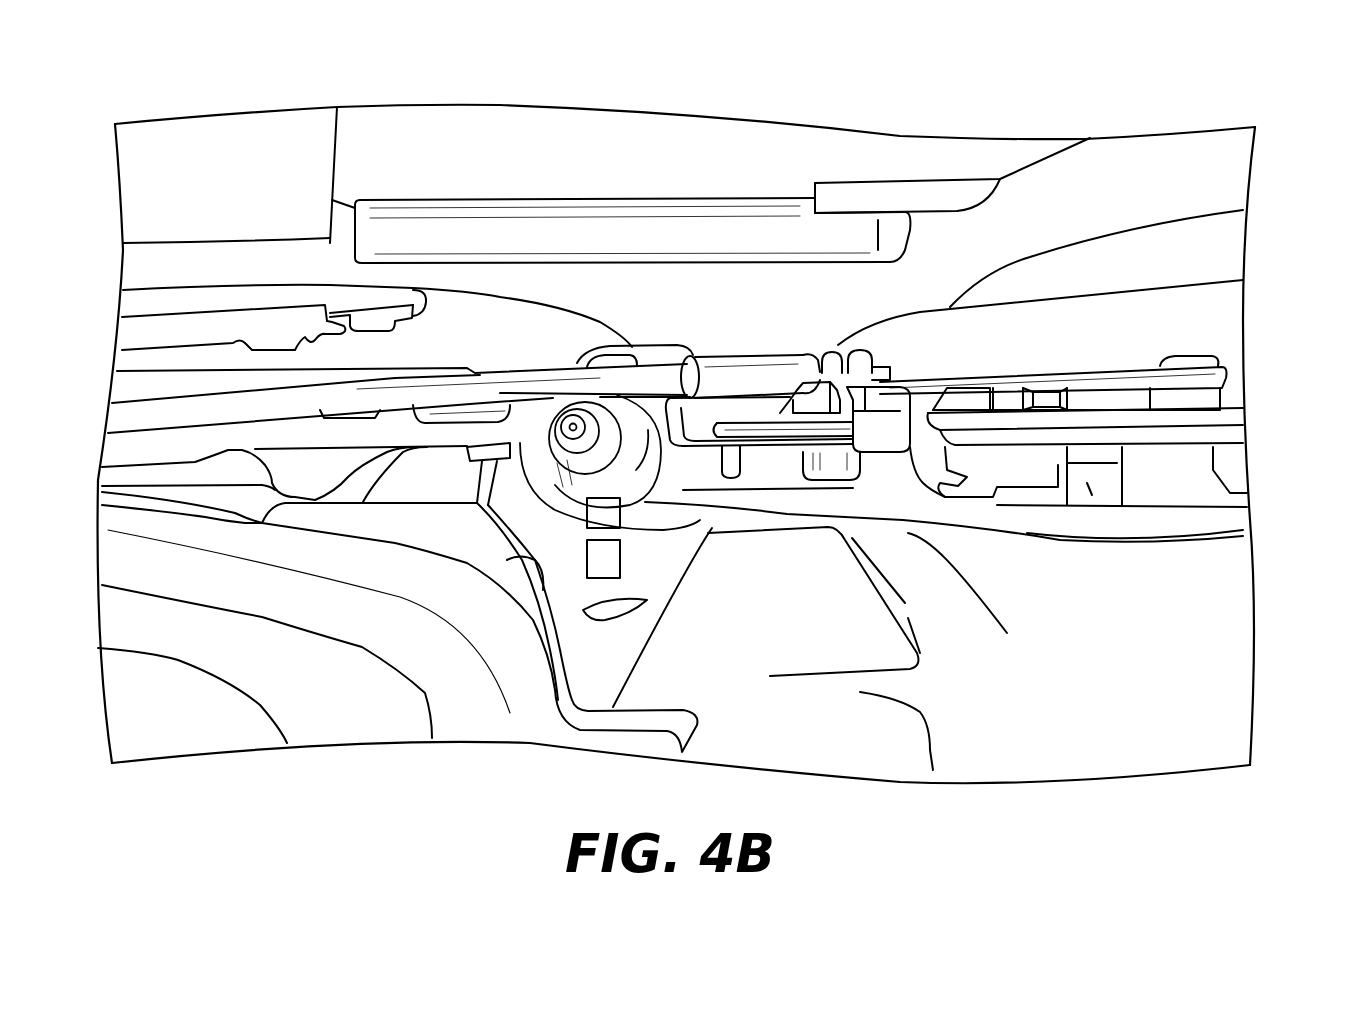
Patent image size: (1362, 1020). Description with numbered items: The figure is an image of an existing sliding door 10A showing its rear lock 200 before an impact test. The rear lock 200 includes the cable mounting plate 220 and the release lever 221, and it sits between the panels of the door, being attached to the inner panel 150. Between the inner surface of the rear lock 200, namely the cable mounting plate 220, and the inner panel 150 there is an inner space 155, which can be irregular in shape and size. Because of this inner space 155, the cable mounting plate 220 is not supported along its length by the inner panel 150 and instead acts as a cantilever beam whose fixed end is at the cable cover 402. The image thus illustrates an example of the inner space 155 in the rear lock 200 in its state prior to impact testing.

The sliding door 10A is at (1262, 121).
The inner panel 150 is at (472, 685).
The inner space 155 is at (801, 545).
The rear lock 200 is at (982, 313).
The cable mounting plate 220 is at (768, 447).
The release lever 221 is at (1027, 380).
The cable cover 402 is at (743, 385).